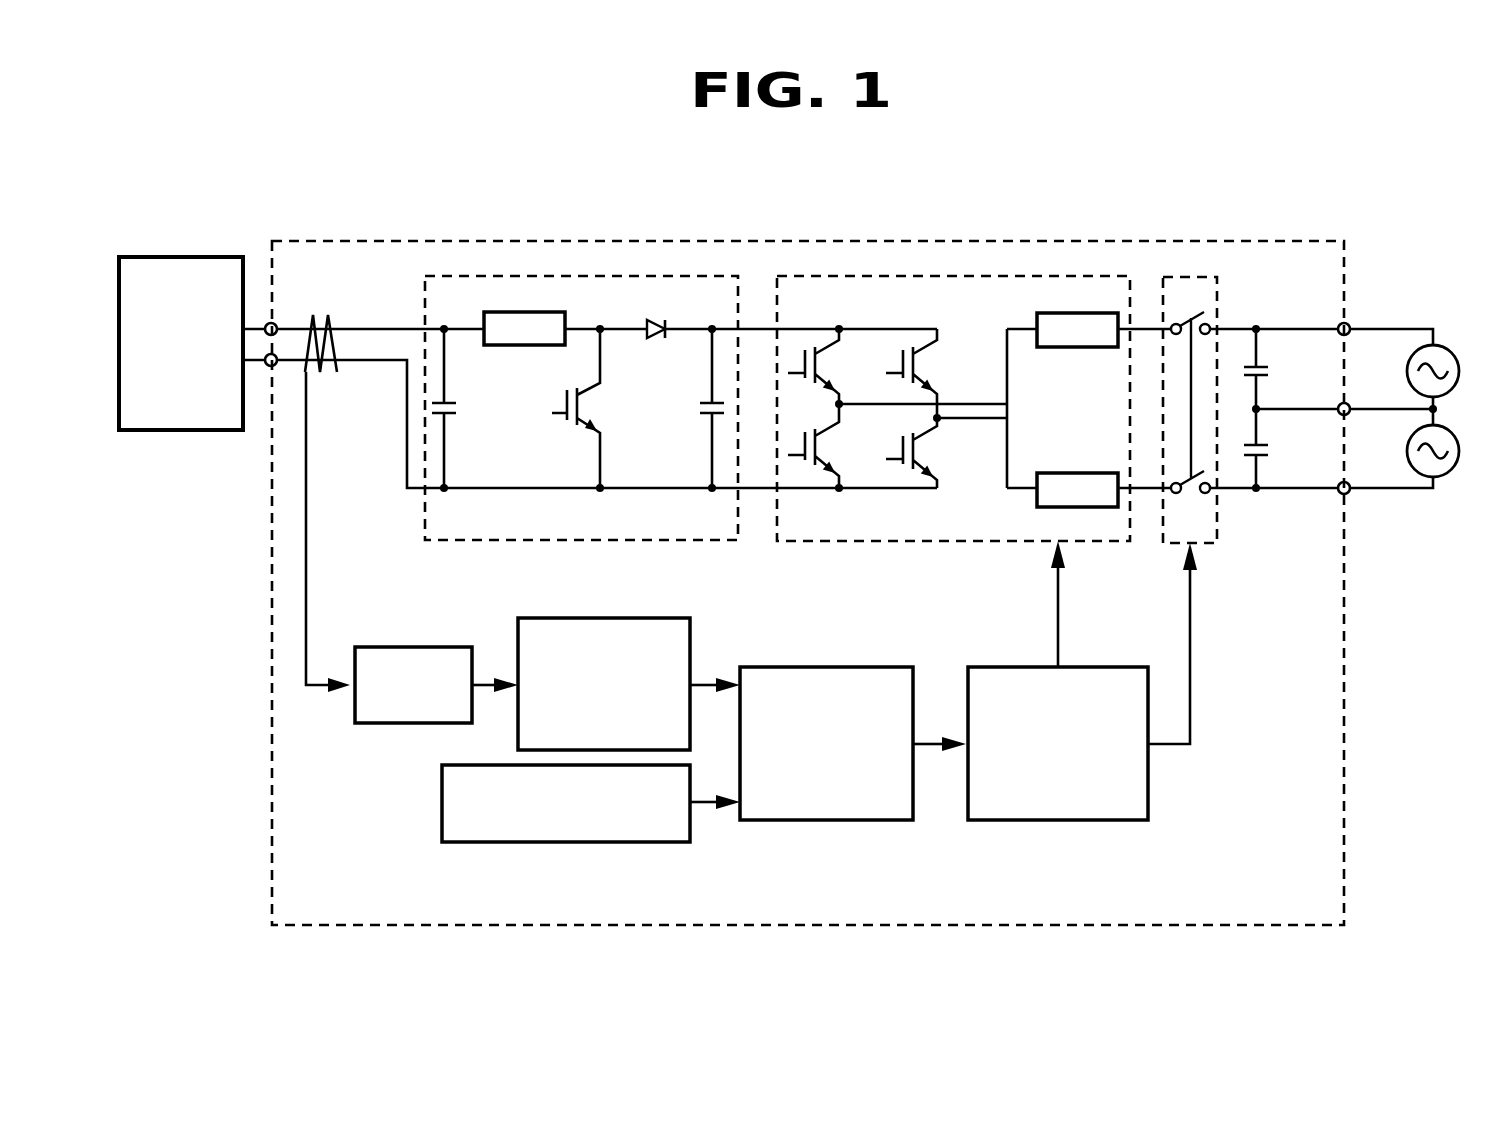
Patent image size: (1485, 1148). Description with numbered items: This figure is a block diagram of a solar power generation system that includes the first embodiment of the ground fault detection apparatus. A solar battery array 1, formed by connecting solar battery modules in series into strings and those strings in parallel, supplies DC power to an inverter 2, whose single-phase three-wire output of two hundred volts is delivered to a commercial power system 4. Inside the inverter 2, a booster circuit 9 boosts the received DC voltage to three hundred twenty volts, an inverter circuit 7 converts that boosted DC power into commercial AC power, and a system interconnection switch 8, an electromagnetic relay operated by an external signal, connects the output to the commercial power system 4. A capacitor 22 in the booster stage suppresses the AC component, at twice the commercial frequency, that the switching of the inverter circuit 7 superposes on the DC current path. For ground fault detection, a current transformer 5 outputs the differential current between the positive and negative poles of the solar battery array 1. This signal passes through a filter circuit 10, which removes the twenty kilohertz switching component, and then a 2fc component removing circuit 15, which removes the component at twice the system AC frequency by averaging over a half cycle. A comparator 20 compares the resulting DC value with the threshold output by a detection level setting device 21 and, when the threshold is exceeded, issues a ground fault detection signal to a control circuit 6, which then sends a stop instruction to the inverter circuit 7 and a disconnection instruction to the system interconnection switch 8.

The solar battery array 1 is at (183, 257).
The inverter 2 is at (1300, 236).
The commercial power system 4 is at (1456, 346).
The current transformer 5 is at (333, 312).
The control circuit 6 is at (1012, 667).
The inverter circuit 7 is at (960, 274).
The system interconnection switch 8 is at (1192, 276).
The booster circuit 9 is at (577, 274).
The filter circuit 10 is at (415, 647).
The 2fc component removing circuit 15 is at (604, 618).
The comparator 20 is at (822, 667).
The detection level setting device 21 is at (566, 843).
The capacitor 22 is at (700, 407).